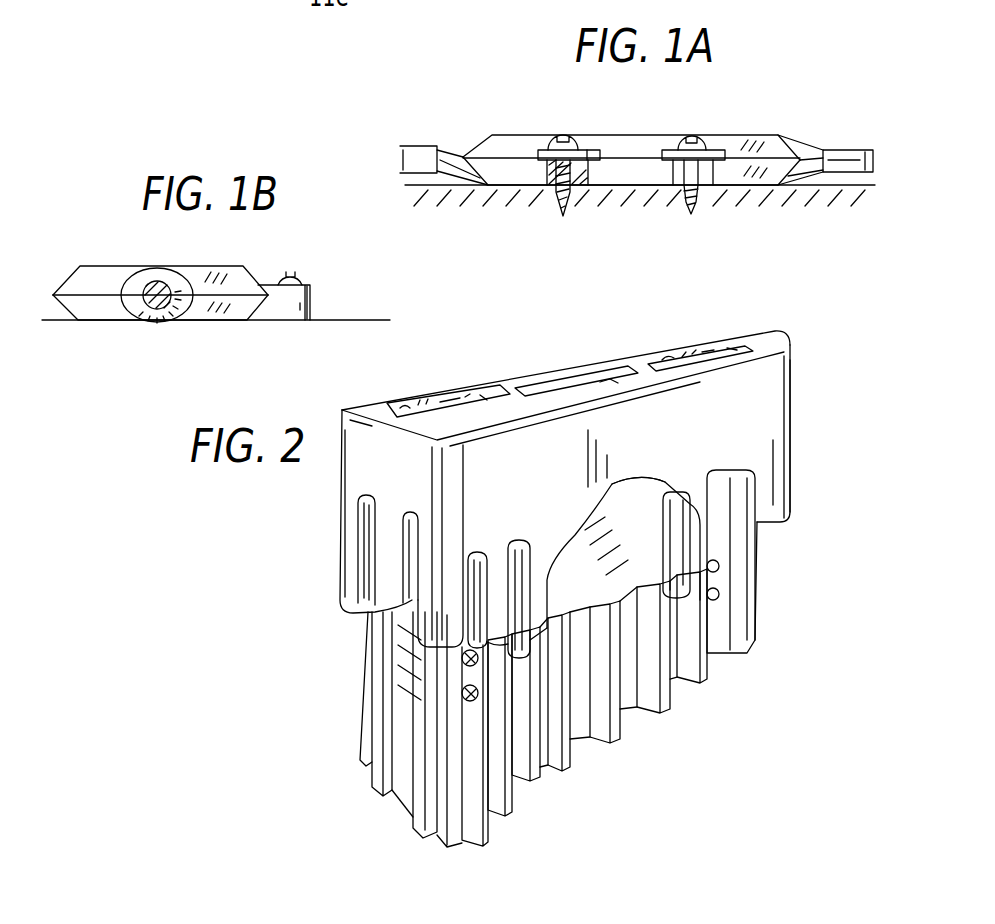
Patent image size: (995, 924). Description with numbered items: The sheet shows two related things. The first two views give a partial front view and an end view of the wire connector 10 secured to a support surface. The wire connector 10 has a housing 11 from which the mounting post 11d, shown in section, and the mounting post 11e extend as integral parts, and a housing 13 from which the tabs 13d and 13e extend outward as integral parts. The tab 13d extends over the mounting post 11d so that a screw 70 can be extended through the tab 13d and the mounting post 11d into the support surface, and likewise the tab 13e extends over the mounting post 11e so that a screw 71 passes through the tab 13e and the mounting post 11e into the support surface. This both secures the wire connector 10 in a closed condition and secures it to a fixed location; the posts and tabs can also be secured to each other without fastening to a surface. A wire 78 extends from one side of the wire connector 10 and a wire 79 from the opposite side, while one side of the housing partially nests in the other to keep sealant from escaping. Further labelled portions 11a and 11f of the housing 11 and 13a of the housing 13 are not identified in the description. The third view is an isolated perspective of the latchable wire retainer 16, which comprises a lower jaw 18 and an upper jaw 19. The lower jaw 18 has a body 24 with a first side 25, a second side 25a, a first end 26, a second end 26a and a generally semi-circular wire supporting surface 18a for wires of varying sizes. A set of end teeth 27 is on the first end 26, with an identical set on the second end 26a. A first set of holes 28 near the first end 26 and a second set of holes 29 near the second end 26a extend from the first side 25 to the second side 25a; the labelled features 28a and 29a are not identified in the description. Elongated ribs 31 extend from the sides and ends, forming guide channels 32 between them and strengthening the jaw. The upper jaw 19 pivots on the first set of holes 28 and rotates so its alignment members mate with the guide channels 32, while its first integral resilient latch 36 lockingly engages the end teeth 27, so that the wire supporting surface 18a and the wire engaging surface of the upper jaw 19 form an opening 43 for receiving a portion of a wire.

In FIG. 1A, the wire connector 10 is at (542, 80).
In FIG. 1B, the wire connector 10 is at (110, 220).
In FIG. 1A, the housing 11 is at (505, 170).
In FIG. 1B, the base 11a is at (92, 308).
In FIG. 1A, the mounting post 11d is at (546, 172).
In FIG. 1B, the mounting post 11d is at (310, 305).
In FIG. 1A, the mounting post 11e is at (698, 176).
In FIG. 1A, the screw shaft 11f is at (566, 204).
In FIG. 1A, the housing 13 is at (492, 134).
In FIG. 1B, the rail 13a is at (83, 280).
In FIG. 1A, the tab 13d is at (588, 148).
In FIG. 1B, the tab 13d is at (310, 287).
In FIG. 1A, the tab 13e is at (716, 150).
In FIG. 2, the latchable wire retainer 16 is at (800, 345).
In FIG. 2, the lower jaw 18 is at (676, 681).
In FIG. 2, the wire supporting surface 18a is at (628, 560).
In FIG. 2, the upper jaw 19 is at (792, 430).
In FIG. 2, the body 24 is at (368, 790).
In FIG. 2, the first side 25 is at (540, 770).
In FIG. 2, the second side 25a is at (363, 730).
In FIG. 2, the first end 26 is at (395, 800).
In FIG. 2, the second end 26a is at (760, 620).
In FIG. 2, the set of end teeth 27 is at (402, 660).
In FIG. 2, the first set of holes 28 is at (473, 701).
In FIG. 2, the pin 28a is at (483, 660).
In FIG. 2, the second set of holes 29 is at (719, 566).
In FIG. 2, the hole 29a is at (719, 594).
In FIG. 2, the ribs 31 is at (712, 676).
In FIG. 2, the guide channels 32 is at (433, 834).
In FIG. 2, the first integral resilient latch 36 is at (383, 563).
In FIG. 2, the opening 43 is at (638, 510).
In FIG. 1A, the screw 70 is at (556, 144).
In FIG. 1B, the screw 70 is at (300, 276).
In FIG. 1A, the screw 71 is at (680, 143).
In FIG. 1A, the wire 78 is at (421, 147).
In FIG. 1B, the wire 78 is at (160, 286).
In FIG. 1A, the wire 79 is at (843, 149).